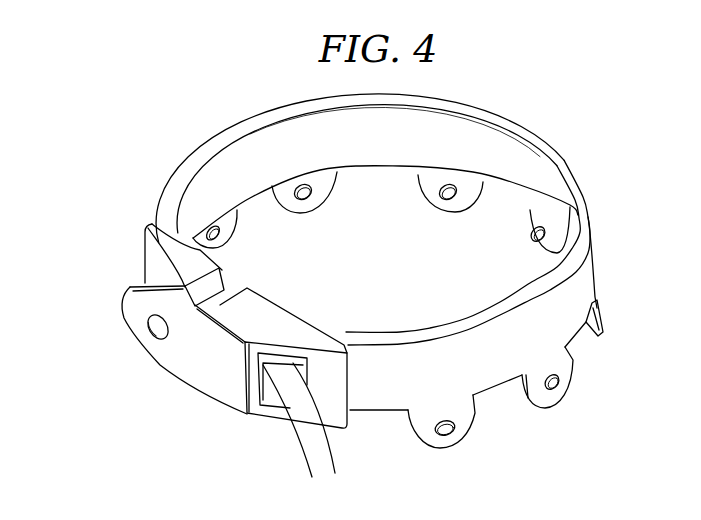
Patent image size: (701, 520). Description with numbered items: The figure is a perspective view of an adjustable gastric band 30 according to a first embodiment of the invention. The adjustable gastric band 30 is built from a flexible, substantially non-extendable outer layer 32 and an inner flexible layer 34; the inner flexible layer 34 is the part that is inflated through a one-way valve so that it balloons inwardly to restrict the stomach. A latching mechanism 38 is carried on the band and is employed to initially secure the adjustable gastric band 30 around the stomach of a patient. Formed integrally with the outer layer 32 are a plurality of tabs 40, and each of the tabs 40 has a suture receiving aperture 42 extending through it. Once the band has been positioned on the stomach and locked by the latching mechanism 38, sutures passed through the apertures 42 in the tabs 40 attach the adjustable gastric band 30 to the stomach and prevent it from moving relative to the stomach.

The adjustable gastric band 30 is at (376, 263).
The outer layer 32 is at (395, 318).
The inner flexible layer 34 is at (373, 209).
The latching mechanism 38 is at (204, 350).
The tabs 40 is at (425, 324).
The suture receiving aperture 42 is at (389, 314).